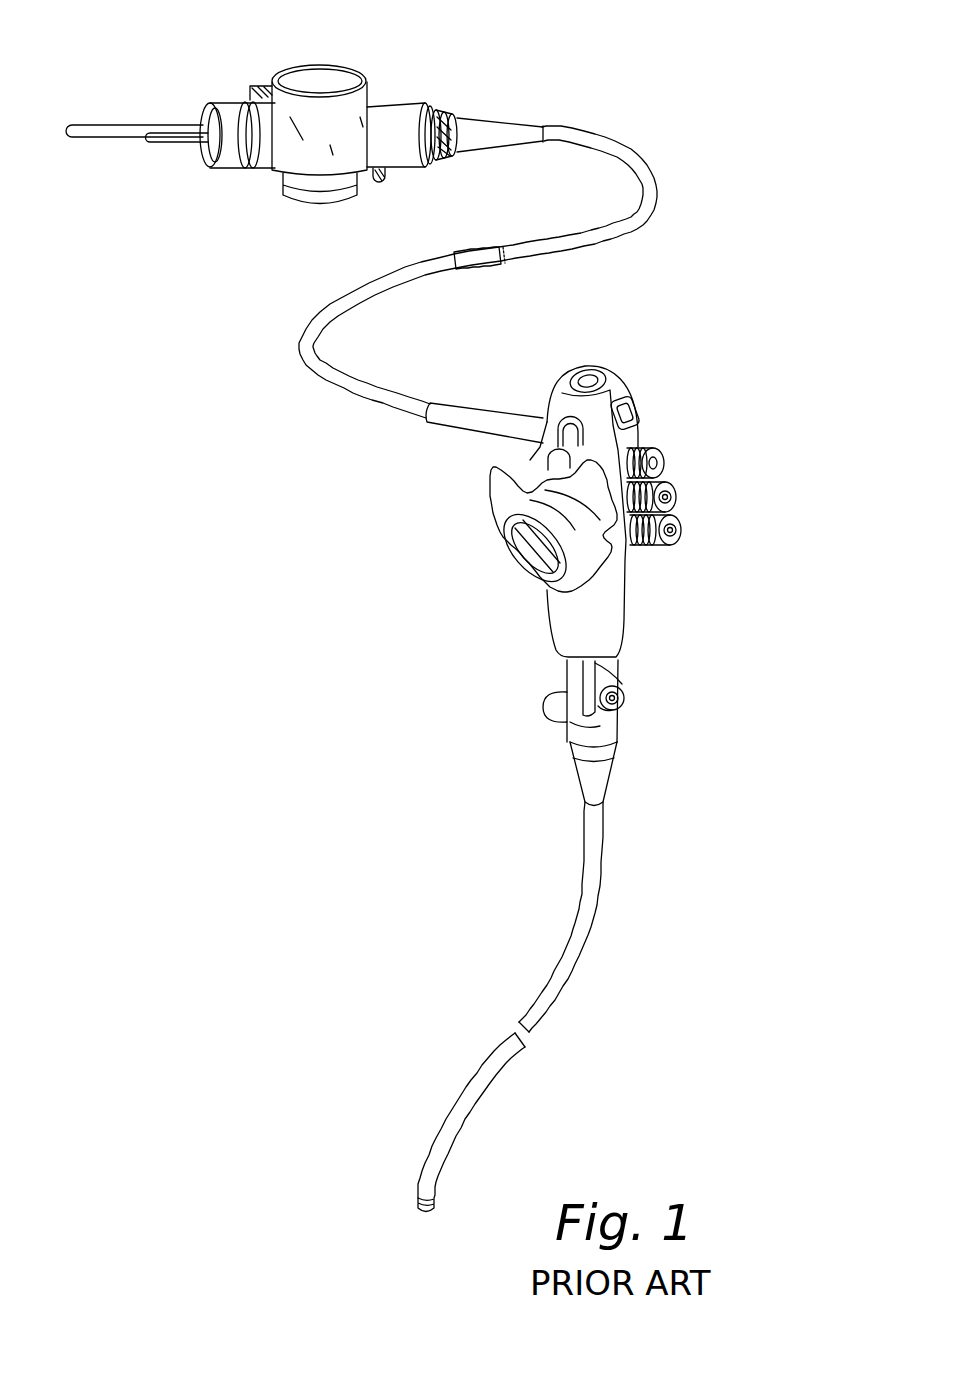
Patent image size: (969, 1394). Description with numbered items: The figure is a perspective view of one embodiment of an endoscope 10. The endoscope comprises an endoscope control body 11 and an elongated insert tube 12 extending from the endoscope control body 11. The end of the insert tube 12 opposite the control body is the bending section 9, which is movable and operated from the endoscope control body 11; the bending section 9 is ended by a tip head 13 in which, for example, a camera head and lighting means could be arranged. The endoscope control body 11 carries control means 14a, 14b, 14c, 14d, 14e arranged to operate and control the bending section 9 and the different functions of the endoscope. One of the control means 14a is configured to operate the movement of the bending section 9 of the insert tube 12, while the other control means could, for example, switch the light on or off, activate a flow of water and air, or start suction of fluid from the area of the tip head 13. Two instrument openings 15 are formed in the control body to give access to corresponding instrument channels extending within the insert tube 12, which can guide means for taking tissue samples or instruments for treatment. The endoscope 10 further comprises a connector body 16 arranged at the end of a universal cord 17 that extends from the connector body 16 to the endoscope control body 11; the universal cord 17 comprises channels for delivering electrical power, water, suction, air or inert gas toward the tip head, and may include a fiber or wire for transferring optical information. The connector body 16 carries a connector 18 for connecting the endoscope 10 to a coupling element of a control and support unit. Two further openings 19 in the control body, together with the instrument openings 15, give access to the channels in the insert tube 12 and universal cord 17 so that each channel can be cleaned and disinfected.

The bending section 9 is at (457, 1120).
The endoscope 10 is at (575, 469).
The endoscope control body 11 is at (634, 442).
The insert tube 12 is at (586, 913).
The tip head 13 is at (430, 1213).
The control means 14a is at (517, 557).
The control means 14b is at (556, 441).
The control means 14c is at (586, 370).
The control means 14d is at (630, 408).
The control means 14e is at (664, 462).
The instrument openings 15 is at (543, 705).
The connector body 16 is at (441, 112).
The universal cord 17 is at (623, 150).
The connector 18 is at (205, 110).
The openings 19 is at (677, 494).